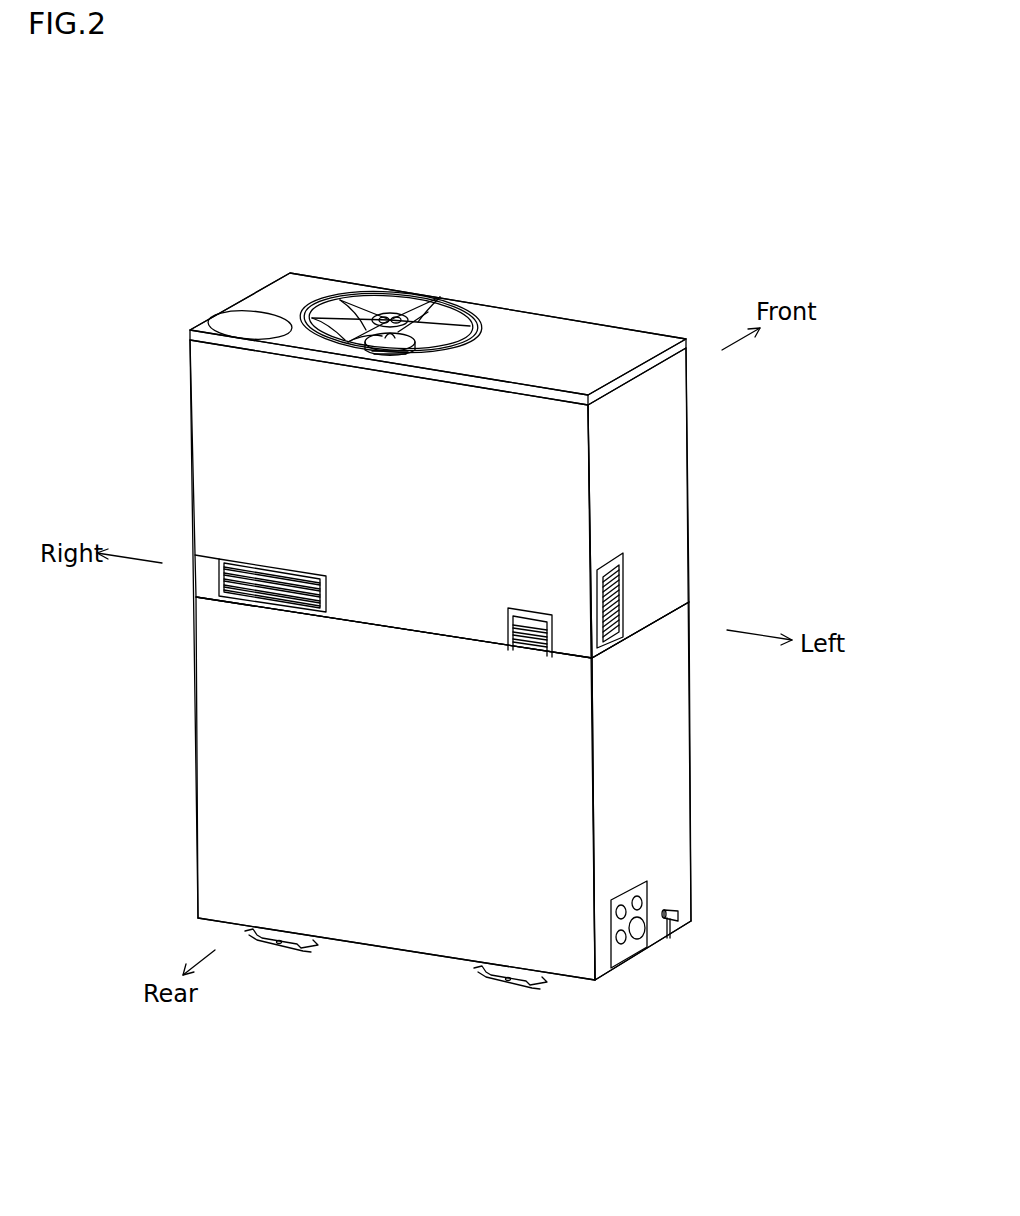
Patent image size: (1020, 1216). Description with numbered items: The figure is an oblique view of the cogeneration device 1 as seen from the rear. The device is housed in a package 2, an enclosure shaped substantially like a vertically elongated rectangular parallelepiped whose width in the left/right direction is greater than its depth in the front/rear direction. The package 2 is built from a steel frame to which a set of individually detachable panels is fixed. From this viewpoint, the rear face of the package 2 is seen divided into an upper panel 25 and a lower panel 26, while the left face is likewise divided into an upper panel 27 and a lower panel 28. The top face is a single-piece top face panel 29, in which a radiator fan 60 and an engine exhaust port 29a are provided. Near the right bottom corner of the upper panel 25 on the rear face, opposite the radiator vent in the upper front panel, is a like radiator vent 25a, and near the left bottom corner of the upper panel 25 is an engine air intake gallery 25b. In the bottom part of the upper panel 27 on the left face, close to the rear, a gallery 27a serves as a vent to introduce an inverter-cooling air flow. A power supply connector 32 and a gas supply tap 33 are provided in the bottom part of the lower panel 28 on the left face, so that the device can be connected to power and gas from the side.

The cogeneration device 1 is at (612, 242).
The package 2 is at (352, 283).
The upper panel 25 is at (222, 441).
The radiator vent 25a is at (230, 600).
The engine air intake gallery 25b is at (528, 632).
The lower panel 26 is at (218, 773).
The upper panel 27 is at (668, 470).
The gallery 27a is at (620, 610).
The lower panel 28 is at (674, 792).
The top face panel 29 is at (537, 332).
The engine exhaust port 29a is at (233, 322).
The power supply connector 32 is at (632, 952).
The gas supply tap 33 is at (687, 920).
The radiator fan 60 is at (425, 318).